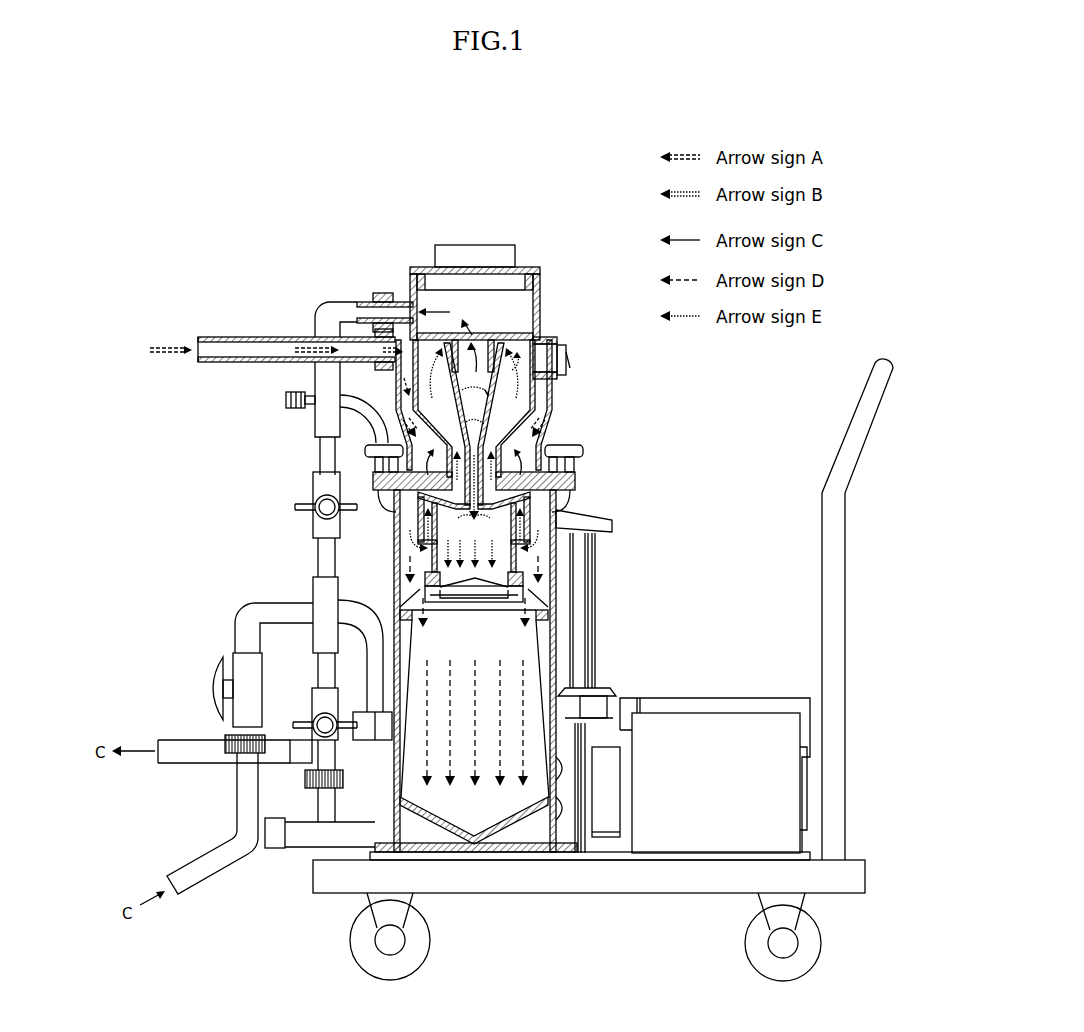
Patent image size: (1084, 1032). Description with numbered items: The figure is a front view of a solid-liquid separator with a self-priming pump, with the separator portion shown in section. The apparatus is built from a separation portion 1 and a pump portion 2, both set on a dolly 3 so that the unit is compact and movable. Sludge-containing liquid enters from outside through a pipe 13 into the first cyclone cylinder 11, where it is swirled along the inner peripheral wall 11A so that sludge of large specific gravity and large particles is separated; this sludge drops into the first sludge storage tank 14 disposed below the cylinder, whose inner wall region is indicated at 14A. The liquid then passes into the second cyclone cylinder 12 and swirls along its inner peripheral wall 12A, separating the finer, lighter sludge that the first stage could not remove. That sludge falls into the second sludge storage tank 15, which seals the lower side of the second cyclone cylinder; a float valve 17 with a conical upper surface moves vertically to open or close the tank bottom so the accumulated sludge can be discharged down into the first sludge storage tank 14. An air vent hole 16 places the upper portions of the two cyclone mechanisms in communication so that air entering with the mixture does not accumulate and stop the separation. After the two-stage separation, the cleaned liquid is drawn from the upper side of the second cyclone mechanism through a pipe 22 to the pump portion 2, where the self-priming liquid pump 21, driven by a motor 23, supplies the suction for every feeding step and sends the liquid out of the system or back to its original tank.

The separation portion 1 is at (552, 318).
The pump portion 2 is at (634, 520).
The dolly 3 is at (577, 890).
The first cyclone cylinder 11 is at (535, 443).
The inner peripheral wall 11A is at (520, 428).
The second cyclone cylinder 12 is at (497, 388).
The inner peripheral wall 12A is at (489, 381).
The pipe 13 is at (233, 337).
The first sludge storage tank 14 is at (552, 647).
The inner wall of dust collecting tank 14A is at (537, 673).
The second sludge storage tank 15 is at (517, 557).
The air vent hole 16 is at (440, 333).
The float valve 17 is at (480, 594).
The self-priming liquid pump 21 is at (582, 519).
The pipe 22 is at (348, 310).
The motor 23 is at (607, 793).